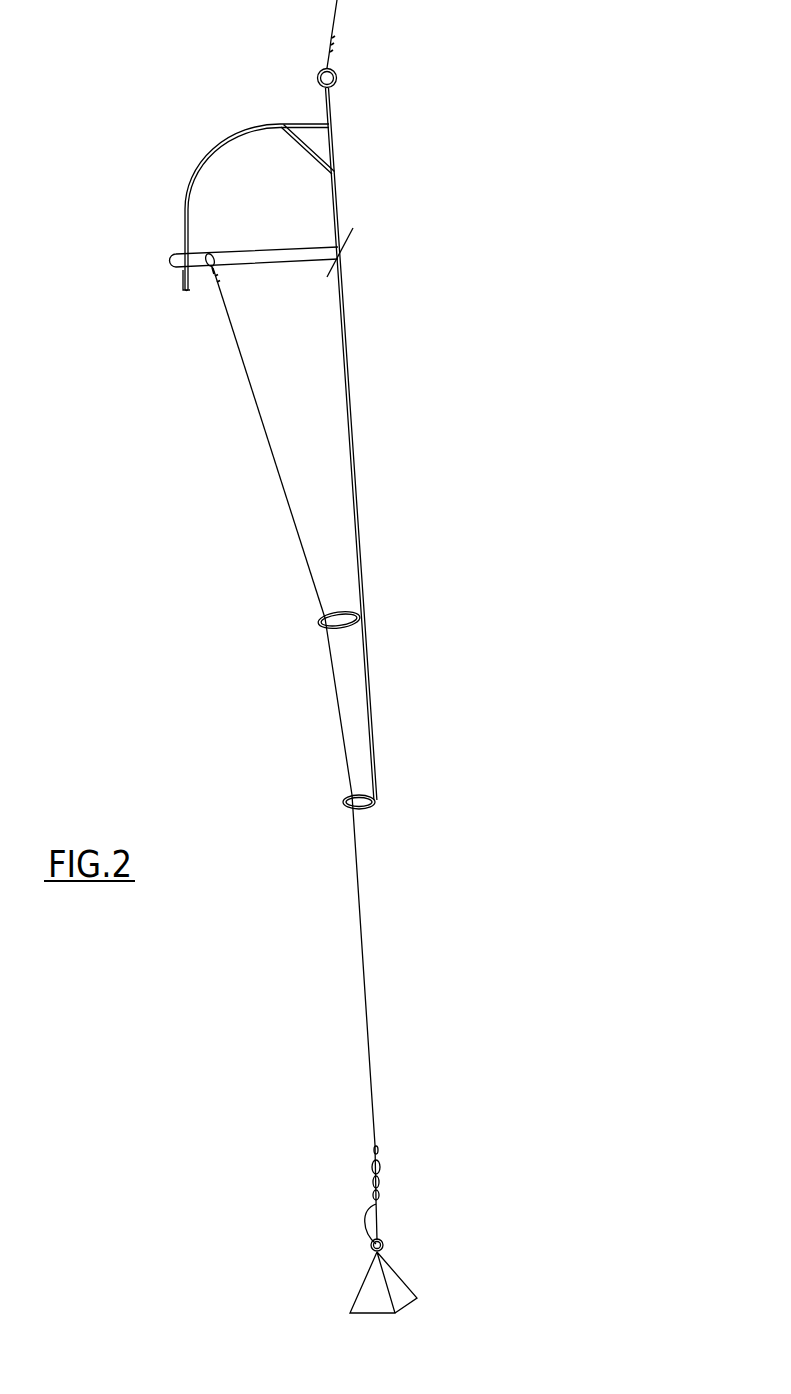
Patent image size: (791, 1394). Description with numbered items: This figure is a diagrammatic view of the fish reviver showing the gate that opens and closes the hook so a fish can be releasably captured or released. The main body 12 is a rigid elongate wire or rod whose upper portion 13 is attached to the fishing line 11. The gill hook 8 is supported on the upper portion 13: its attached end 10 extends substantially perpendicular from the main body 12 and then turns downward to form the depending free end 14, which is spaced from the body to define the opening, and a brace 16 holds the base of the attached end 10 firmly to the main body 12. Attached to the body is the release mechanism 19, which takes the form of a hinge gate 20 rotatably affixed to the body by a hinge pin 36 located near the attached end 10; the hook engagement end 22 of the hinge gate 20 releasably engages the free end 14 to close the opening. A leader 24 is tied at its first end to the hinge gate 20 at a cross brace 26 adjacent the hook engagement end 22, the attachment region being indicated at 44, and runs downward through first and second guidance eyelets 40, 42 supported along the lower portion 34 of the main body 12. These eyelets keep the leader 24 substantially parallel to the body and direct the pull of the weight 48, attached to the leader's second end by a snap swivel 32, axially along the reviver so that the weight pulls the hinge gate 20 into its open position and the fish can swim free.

The gill hook 8 is at (188, 180).
The attached end 10 is at (326, 124).
The fishing line 11 is at (334, 18).
The main body 12 is at (345, 312).
The upper portion 13 is at (361, 435).
The free end 14 is at (180, 283).
The brace 16 is at (330, 148).
The release mechanism 19 is at (196, 287).
The hinge gate 20 is at (290, 263).
The hook engagement end 22 is at (172, 260).
The leader 24 is at (247, 380).
The cross brace 26 is at (211, 254).
The snap swivel 32 is at (382, 1180).
The lower portion 34 is at (398, 854).
The hinge pin 36 is at (352, 240).
The first guidance eyelet 40 is at (350, 632).
The second guidance eyelet 42 is at (370, 810).
The knot 44 is at (214, 278).
The weight 48 is at (377, 1293).